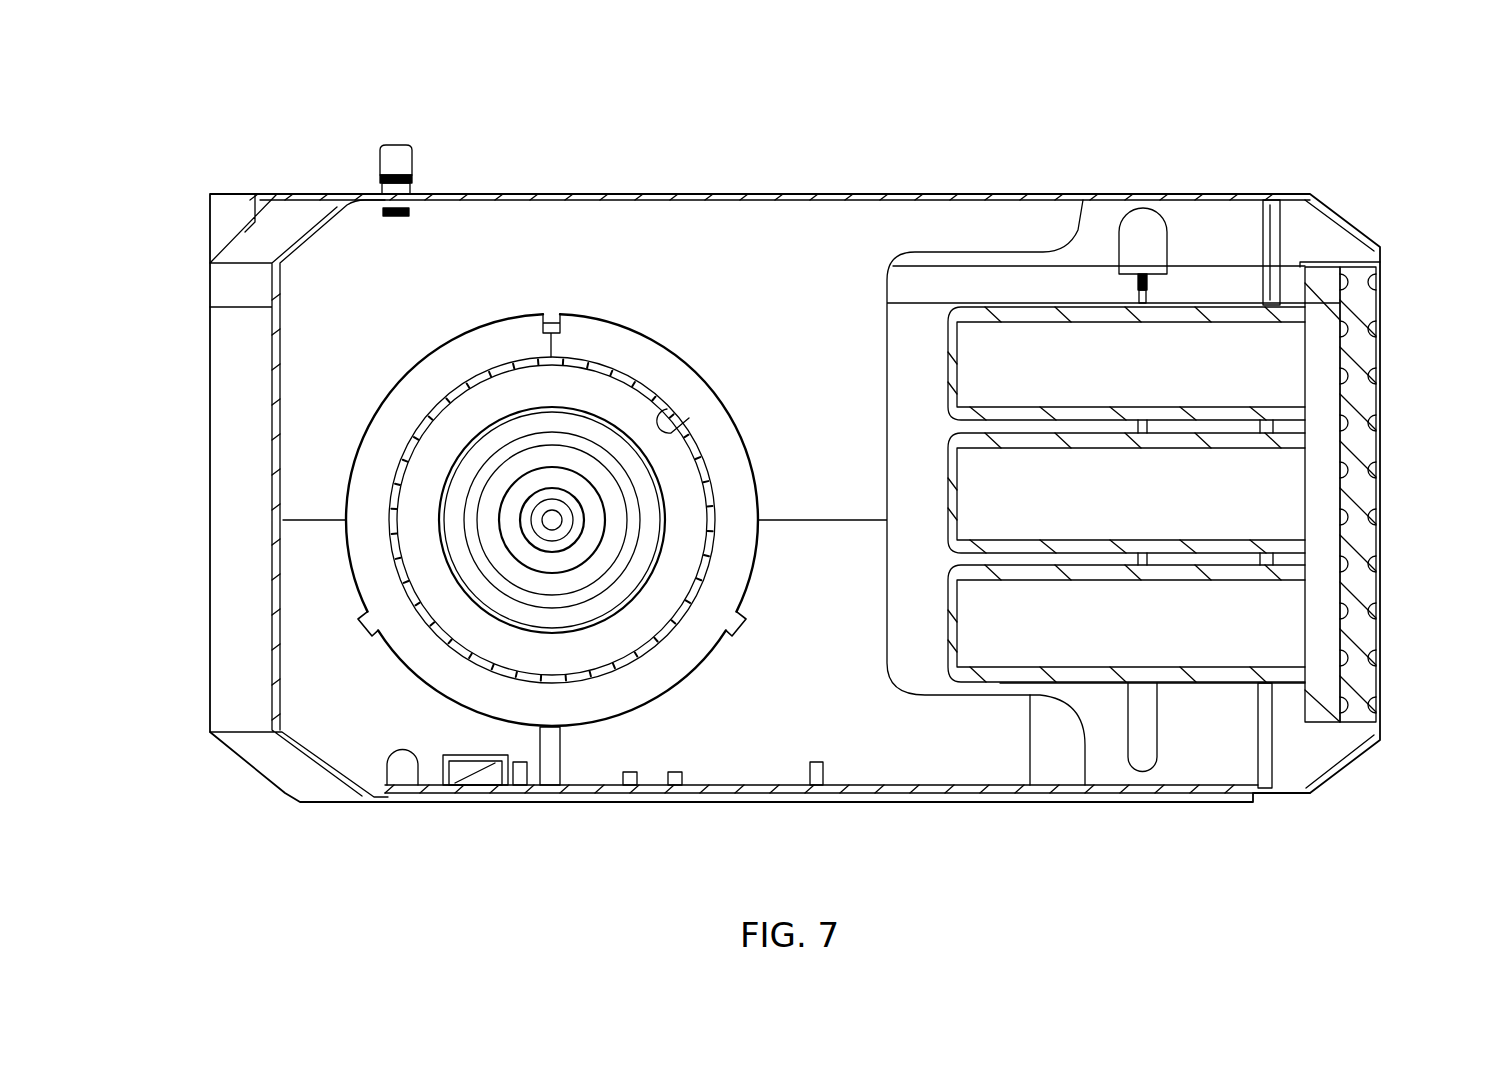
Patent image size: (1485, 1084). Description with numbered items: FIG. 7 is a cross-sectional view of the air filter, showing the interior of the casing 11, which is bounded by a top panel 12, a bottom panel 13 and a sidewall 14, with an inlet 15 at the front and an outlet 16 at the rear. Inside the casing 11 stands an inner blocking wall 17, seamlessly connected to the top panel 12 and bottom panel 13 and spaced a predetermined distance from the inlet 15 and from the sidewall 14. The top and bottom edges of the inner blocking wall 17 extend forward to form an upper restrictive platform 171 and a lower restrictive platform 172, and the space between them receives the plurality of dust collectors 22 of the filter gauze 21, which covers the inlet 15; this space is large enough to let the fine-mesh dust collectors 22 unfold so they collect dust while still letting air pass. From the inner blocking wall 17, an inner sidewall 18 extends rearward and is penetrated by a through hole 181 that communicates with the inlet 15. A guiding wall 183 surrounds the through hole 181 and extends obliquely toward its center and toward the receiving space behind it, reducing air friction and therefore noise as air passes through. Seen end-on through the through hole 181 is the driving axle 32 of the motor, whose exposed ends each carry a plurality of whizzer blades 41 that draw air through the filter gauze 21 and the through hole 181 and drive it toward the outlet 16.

The casing 11 is at (884, 192).
The top panel 12 is at (945, 195).
The bottom panel 13 is at (780, 800).
The sidewall 14 is at (1215, 285).
The inlet 15 is at (1385, 515).
The outlet 16 is at (210, 380).
The inner blocking wall 17 is at (1031, 489).
The upper restrictive platform 171 is at (1020, 250).
The lower restrictive platform 172 is at (1030, 700).
The inner sidewall 18 is at (600, 481).
The through hole 181 is at (620, 367).
The guiding wall 183 is at (655, 365).
The filter gauze 21 is at (1370, 350).
The dust collector 22 is at (1240, 410).
The driving axle 32 is at (547, 505).
The whizzer blade 41 is at (680, 432).